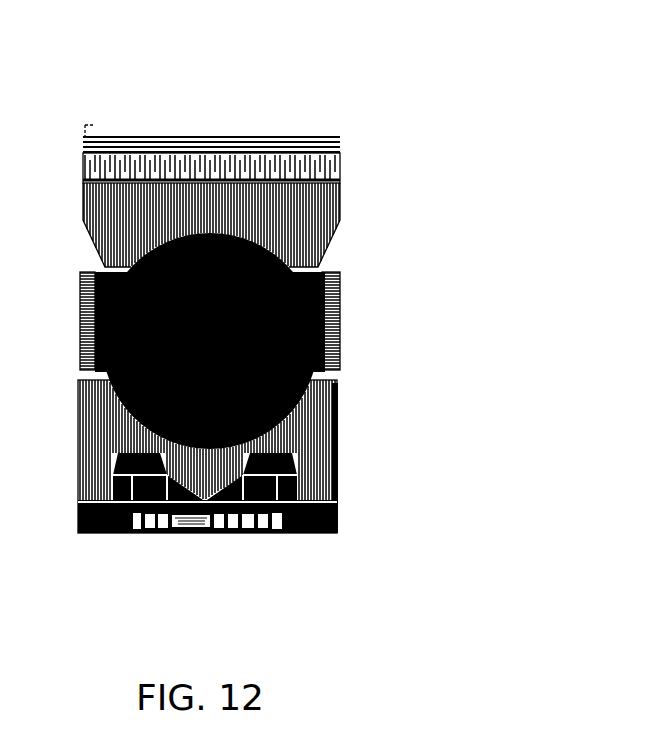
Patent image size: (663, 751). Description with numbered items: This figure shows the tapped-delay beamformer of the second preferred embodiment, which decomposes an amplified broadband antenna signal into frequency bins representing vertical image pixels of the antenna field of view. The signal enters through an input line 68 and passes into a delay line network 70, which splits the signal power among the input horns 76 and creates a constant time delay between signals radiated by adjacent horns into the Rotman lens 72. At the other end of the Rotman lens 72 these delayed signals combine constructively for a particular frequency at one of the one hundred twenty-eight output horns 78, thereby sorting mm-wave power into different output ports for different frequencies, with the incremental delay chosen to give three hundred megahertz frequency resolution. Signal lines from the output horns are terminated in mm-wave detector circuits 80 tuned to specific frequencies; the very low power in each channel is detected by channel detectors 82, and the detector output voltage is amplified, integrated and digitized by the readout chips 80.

The input line 68 is at (87, 120).
The delay line network 70 is at (292, 192).
The input horn array 76 is at (303, 253).
The Rotman lens 72 is at (340, 312).
The output horn array 78 is at (340, 403).
The channel detectors 82 is at (340, 465).
The mm-wave detector circuits / readout chips 80 is at (267, 497).